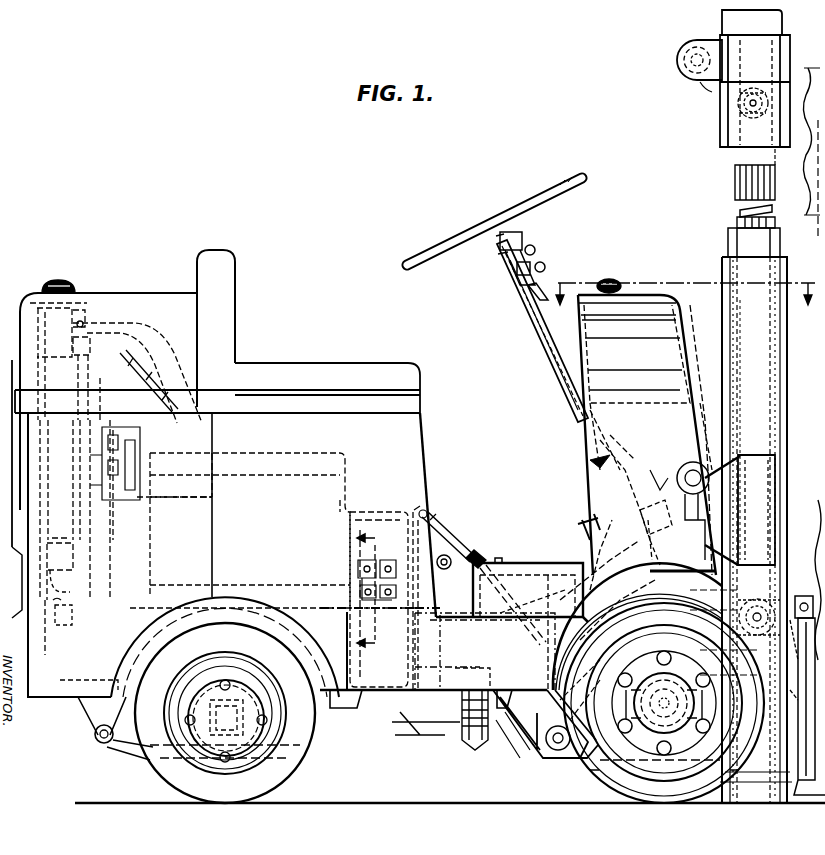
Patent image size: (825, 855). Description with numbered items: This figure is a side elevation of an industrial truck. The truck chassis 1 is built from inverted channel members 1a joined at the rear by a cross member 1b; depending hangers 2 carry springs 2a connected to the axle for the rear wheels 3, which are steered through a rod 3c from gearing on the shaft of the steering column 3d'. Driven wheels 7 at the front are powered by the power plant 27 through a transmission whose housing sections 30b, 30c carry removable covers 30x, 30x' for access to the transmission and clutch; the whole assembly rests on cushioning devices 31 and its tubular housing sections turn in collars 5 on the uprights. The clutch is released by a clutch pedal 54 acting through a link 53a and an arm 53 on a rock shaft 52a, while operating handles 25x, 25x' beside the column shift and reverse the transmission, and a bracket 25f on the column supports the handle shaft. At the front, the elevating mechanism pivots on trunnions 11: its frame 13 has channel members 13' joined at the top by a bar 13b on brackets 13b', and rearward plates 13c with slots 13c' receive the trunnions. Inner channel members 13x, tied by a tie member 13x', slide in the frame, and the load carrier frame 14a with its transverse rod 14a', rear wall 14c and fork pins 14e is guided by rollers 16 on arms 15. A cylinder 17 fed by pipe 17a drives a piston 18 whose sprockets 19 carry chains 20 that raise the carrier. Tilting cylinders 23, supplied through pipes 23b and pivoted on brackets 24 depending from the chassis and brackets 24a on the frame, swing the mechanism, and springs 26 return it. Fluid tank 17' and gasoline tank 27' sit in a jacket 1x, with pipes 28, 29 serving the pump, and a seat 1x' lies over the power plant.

The truck chassis 1 is at (433, 703).
The channel members 1a is at (466, 709).
The cross member 1b is at (378, 592).
The jacket 1x is at (647, 427).
The seat 1x' is at (217, 374).
The hangers 2 is at (90, 716).
The springs 2a is at (128, 760).
The rear wheels 3 is at (300, 770).
The rod 3c is at (404, 742).
The steering column 3d' is at (542, 331).
The collars 5 is at (686, 305).
The wheels 7 is at (582, 784).
The trunnions 11 is at (686, 458).
The frame 13 is at (720, 430).
The channel members 13' is at (770, 530).
The bar 13b is at (685, 60).
The brackets 13b' is at (695, 94).
The plates 13c is at (740, 496).
The slots 13c' is at (635, 532).
The channel members 13x is at (738, 242).
The tie member 13x' is at (773, 22).
The frame 14a is at (807, 706).
The transverse rod 14a' is at (808, 595).
The rear wall 14c is at (812, 68).
The pin 14e is at (800, 150).
The arms 15 is at (815, 390).
The roller 16 is at (760, 598).
The cylinder 17 is at (769, 217).
The tank 17' is at (704, 440).
The pipe 17a is at (600, 478).
The piston 18 is at (775, 208).
The sprockets 19 is at (722, 126).
The chains 20 is at (733, 180).
The cylinders 23 is at (565, 775).
The fluid supply pipe 23b is at (538, 760).
The brackets 24 is at (500, 752).
The brackets 24a is at (728, 790).
The bracket 25f is at (512, 280).
The operating handle 25x is at (559, 260).
The operating handle 25x' is at (549, 242).
The springs 26 is at (88, 628).
The power plant 27 is at (231, 462).
The gasoline tank 27' is at (544, 335).
The pipe 28 is at (58, 575).
The pipe 29 is at (53, 633).
The housing section 30b is at (384, 508).
The housing section 30c is at (396, 628).
The cover 30x is at (528, 613).
The cover 30x' is at (440, 517).
The cushioning device 31 is at (348, 574).
The rock shaft 52a is at (445, 570).
The arm 53 is at (462, 543).
The link 53a is at (532, 597).
The clutch pedal 54 is at (580, 520).